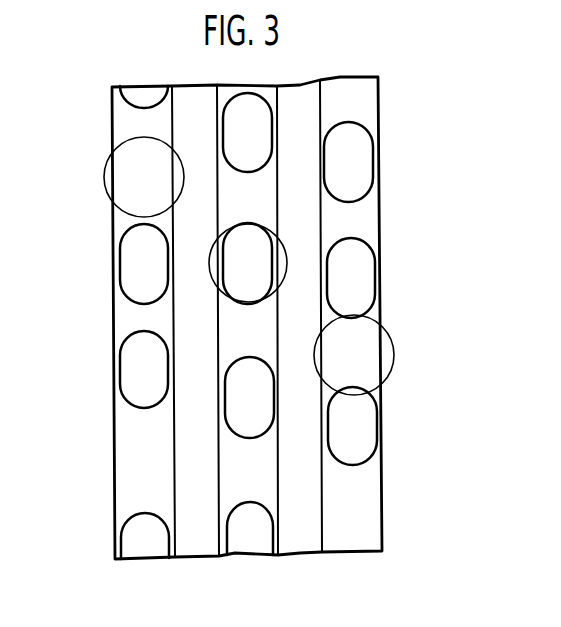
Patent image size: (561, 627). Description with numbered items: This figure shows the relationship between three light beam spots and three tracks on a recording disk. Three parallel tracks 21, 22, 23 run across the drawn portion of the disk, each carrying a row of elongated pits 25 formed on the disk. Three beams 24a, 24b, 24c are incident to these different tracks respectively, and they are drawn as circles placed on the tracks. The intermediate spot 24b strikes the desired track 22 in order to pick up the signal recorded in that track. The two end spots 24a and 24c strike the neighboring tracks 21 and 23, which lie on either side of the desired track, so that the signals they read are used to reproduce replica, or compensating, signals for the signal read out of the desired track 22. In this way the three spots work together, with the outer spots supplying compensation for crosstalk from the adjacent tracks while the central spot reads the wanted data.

The track 21 is at (127, 475).
The desired track 22 is at (268, 488).
The track 23 is at (360, 533).
The beam 24a is at (124, 141).
The intermediate spot 24b is at (287, 255).
The beam 24c is at (395, 354).
The pits 25 is at (120, 356).